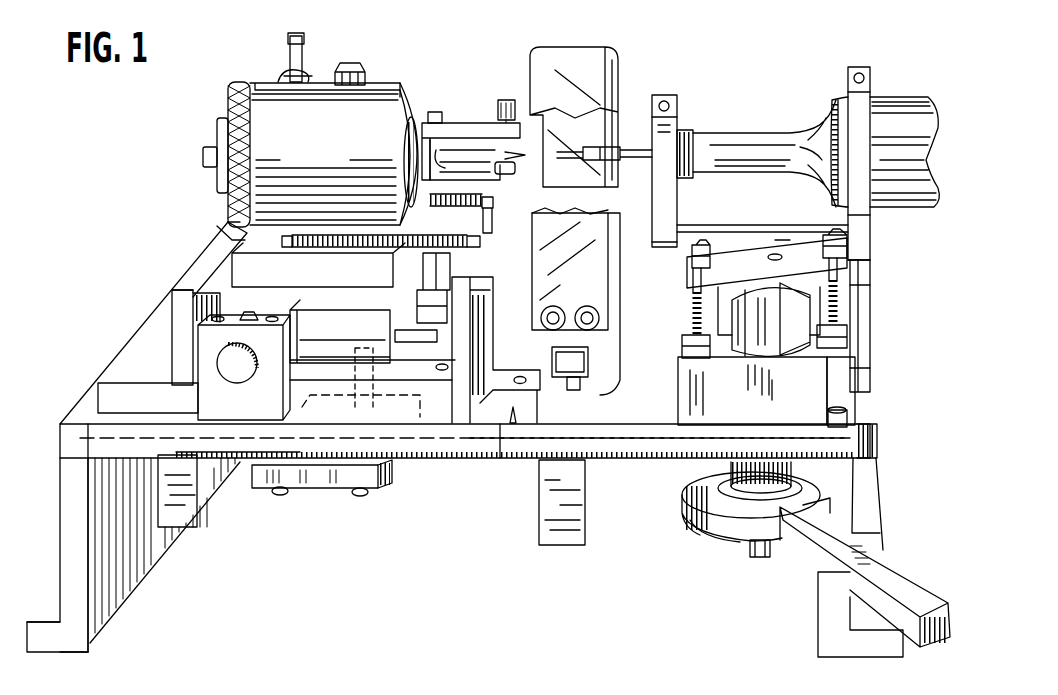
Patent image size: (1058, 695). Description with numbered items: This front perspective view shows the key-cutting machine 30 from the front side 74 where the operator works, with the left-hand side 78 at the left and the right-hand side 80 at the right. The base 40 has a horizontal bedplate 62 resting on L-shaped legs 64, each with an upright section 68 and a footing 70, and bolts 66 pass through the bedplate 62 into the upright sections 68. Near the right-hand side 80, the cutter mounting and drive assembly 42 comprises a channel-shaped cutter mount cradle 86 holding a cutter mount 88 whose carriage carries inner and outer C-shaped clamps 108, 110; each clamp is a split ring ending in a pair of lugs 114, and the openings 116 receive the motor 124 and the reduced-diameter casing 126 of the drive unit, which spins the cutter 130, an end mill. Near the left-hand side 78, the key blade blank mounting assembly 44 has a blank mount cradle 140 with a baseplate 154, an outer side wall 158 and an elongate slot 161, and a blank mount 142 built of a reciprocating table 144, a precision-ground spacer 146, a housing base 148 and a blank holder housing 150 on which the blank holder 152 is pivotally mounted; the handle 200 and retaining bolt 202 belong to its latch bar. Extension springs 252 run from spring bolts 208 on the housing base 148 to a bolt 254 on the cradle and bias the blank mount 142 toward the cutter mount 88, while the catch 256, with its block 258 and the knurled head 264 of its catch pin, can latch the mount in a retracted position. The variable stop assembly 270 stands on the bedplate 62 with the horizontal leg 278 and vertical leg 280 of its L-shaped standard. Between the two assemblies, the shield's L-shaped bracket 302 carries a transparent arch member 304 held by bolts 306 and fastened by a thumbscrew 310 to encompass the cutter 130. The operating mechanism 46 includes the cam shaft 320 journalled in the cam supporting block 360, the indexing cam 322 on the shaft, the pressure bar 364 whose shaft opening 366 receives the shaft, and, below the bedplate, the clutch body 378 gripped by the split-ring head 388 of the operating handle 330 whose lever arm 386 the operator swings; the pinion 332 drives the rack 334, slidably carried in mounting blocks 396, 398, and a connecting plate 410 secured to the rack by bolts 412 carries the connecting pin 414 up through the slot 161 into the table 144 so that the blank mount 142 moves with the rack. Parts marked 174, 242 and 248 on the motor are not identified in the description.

The key-cutting machine 30 is at (196, 158).
The base 40 is at (130, 612).
The cutter mounting and drive assembly 42 is at (790, 110).
The key blade blank mounting assembly 44 is at (410, 75).
The operating mechanism 46 is at (714, 568).
The bedplate 62 is at (427, 452).
The L-shaped legs 64 is at (50, 500).
The bolts 66 is at (853, 415).
The upright sections 68 is at (100, 555).
The footings 70 is at (48, 600).
The front side 74 is at (430, 522).
The left-hand side 78 is at (125, 290).
The right-hand side 80 is at (883, 300).
The cutter mount cradle 86 is at (873, 355).
The cutter mount 88 is at (873, 250).
The inner drive unit clamp 108 is at (676, 204).
The outer drive unit clamp 110 is at (872, 232).
The lugs 114 is at (677, 115).
The openings 116 is at (850, 128).
The motor 124 is at (870, 165).
The casing 126 is at (720, 130).
The cutter 130 is at (555, 165).
The blank mount cradle 140 is at (190, 265).
The key blade blank mount 142 is at (218, 208).
The reciprocating table 144 is at (304, 350).
The spacer 146 is at (398, 330).
The housing base 148 is at (372, 340).
The blank holder housing 150 is at (226, 94).
The key blade blank holder 152 is at (460, 110).
The baseplate 154 is at (150, 340).
The outer side wall 158 is at (163, 358).
The elongate slot 161 is at (496, 350).
The motor housing 174 is at (304, 159).
The handle 200 is at (300, 50).
The retaining bolt 202 is at (352, 62).
The extension spring bolts 208 is at (318, 265).
The housing band 242 is at (252, 130).
The hub 248 is at (217, 136).
The extension springs 252 is at (395, 258).
The bolt 254 is at (493, 207).
The catch 256 is at (188, 393).
The block 258 is at (215, 432).
The knurled outer head 264 is at (232, 382).
The variable blank mount stop assembly 270 is at (514, 432).
The horizontally extending leg 278 is at (660, 446).
The vertically extending leg 280 is at (492, 300).
The L-shaped support bracket 302 is at (598, 330).
The transparent plastic arch member 304 is at (620, 75).
The bolts 306 is at (584, 303).
The thumbscrew 310 is at (585, 390).
The cam shaft 320 is at (760, 560).
The cutter mount indexing cam 322 is at (808, 354).
The operating handle 330 is at (700, 545).
The pinion 332 is at (728, 474).
The blank mount drive rack 334 is at (697, 491).
The cam supporting block 360 is at (718, 393).
The pressure bar 364 is at (728, 255).
The central cylindrical shaft opening 366 is at (782, 252).
The clutch body 378 is at (862, 470).
The lever arm 386 is at (938, 650).
The split ring-type head 388 is at (692, 530).
The mounting block 396 is at (205, 505).
The mounting block 398 is at (555, 547).
The connecting plate 410 is at (268, 490).
The bolts 412 is at (365, 500).
The connecting pin 414 is at (361, 421).